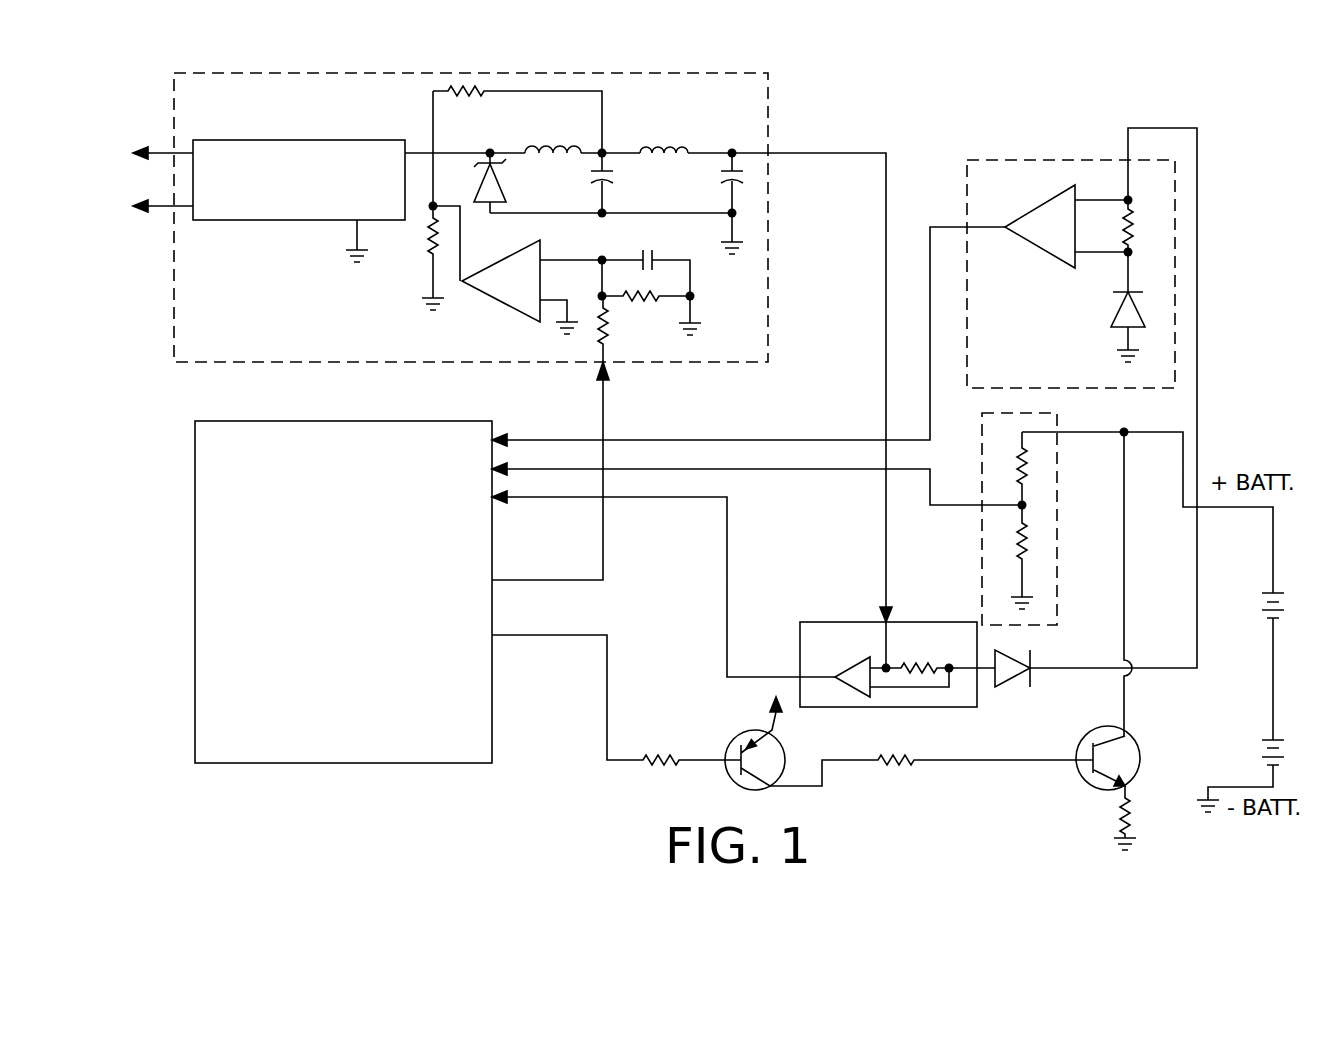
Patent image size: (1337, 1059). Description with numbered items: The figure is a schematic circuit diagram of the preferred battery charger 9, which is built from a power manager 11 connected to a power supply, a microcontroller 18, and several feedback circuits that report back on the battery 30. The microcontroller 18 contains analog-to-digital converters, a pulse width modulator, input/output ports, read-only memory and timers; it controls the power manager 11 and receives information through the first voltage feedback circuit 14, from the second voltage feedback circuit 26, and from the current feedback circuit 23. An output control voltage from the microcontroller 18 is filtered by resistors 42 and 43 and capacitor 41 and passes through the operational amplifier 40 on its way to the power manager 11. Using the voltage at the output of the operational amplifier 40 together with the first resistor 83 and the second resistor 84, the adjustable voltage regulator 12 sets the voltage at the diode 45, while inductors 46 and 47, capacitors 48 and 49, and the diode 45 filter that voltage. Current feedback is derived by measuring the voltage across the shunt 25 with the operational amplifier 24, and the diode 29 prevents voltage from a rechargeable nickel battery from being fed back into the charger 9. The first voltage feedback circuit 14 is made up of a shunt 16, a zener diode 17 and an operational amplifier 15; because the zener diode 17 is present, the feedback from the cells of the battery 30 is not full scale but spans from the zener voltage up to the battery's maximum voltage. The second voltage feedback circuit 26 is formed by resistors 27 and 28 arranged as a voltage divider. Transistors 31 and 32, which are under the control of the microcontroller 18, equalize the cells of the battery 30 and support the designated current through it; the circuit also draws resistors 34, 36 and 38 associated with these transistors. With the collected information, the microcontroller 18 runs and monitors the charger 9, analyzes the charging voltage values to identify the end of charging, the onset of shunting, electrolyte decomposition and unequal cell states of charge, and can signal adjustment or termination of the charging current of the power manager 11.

The battery charger 9 is at (810, 120).
The power manager 11 is at (382, 65).
The adjustable voltage regulator 12 is at (315, 235).
The first voltage feedback circuit 14 is at (1042, 151).
The operational amplifier 15 is at (1040, 205).
The shunt 16 is at (1137, 222).
The zener diode 17 is at (1120, 308).
The microcontroller 18 is at (420, 418).
The current feedback circuit 23 is at (950, 612).
The operational amplifier 24 is at (855, 662).
The shunt 25 is at (910, 660).
The second voltage feedback circuit 26 is at (1072, 512).
The resistor 27 is at (1018, 448).
The resistor 28 is at (1018, 553).
The diode 29 is at (1012, 685).
The battery 30 is at (1268, 592).
The transistor 31 is at (1080, 775).
The transistor 32 is at (735, 745).
The resistor 34 is at (660, 755).
The resistor 36 is at (900, 752).
The resistor 38 is at (1132, 805).
The operational amplifier 40 is at (500, 305).
The capacitor 41 is at (654, 253).
The resistor 42 is at (648, 310).
The resistor 43 is at (608, 350).
The diode 45 is at (505, 182).
The inductor 46 is at (558, 142).
The inductor 47 is at (660, 145).
The capacitor 48 is at (612, 178).
The capacitor 49 is at (726, 184).
The first resistor 83 is at (480, 100).
The second resistor 84 is at (430, 245).